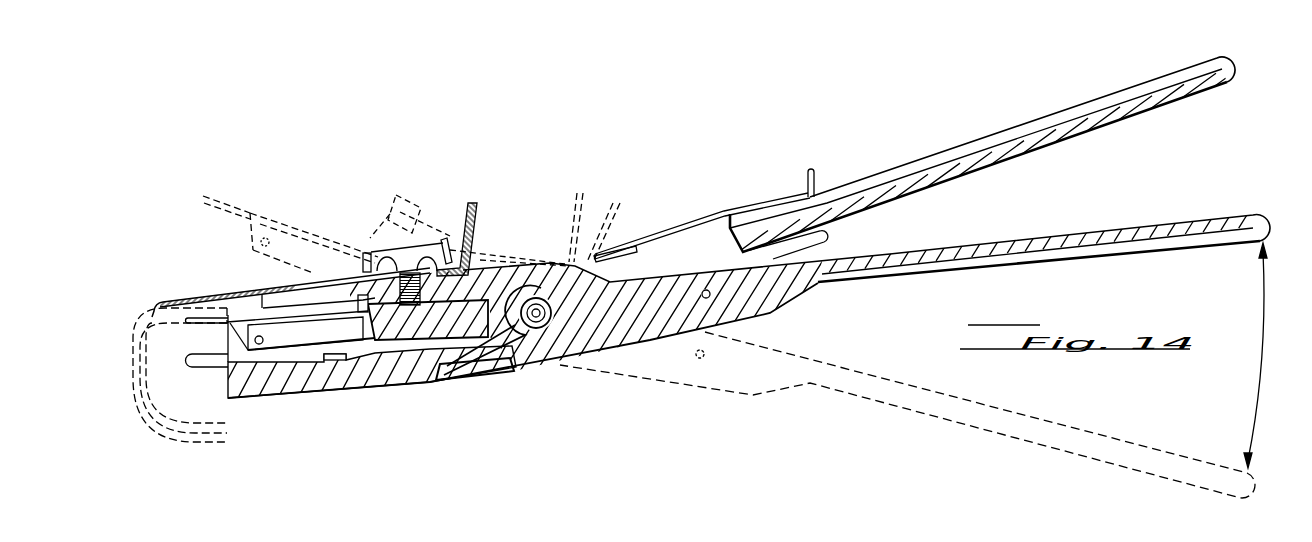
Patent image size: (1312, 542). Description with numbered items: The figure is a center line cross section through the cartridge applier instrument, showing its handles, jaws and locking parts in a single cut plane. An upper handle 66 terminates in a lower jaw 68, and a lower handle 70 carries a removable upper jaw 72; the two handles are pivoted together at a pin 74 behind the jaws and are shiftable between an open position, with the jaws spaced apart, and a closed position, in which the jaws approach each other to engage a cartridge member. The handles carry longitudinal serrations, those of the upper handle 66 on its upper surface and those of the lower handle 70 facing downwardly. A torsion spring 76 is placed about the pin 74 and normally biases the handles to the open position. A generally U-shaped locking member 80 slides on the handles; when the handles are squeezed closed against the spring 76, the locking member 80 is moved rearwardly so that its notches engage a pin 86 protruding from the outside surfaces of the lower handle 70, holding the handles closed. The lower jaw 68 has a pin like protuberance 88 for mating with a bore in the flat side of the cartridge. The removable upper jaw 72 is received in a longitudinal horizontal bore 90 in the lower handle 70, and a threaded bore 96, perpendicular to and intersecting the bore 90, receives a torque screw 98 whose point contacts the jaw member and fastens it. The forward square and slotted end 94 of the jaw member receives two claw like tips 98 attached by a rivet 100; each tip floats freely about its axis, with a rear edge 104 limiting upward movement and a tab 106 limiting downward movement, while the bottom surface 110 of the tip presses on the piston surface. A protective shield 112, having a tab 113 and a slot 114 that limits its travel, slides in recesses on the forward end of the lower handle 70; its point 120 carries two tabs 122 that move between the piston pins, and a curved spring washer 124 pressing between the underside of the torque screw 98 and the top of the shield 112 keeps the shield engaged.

The upper handle 66 is at (1007, 137).
The lower jaw 68 is at (313, 390).
The lower handle 70 is at (1067, 237).
The removable upper jaw 72 is at (362, 312).
The pin 74 is at (547, 325).
The torsion spring 76 is at (513, 343).
The locking member 80 is at (677, 228).
The pin 86 is at (738, 320).
The pin like protuberance 88 is at (207, 368).
The bore 90 is at (545, 263).
The square and slotted end 94 is at (291, 345).
The threaded bore 96 is at (437, 380).
The torque screw / claw like tips 98 is at (448, 239).
The rivet 100 is at (259, 348).
The rear edge 104 is at (432, 243).
The tab 106 is at (337, 362).
The bottom surface 110 is at (205, 323).
The protective shield 112 is at (267, 293).
The tab 113 is at (472, 261).
The slot 114 is at (325, 327).
The point 120 is at (158, 302).
The tabs 122 is at (152, 314).
The curved spring washer 124 is at (444, 235).